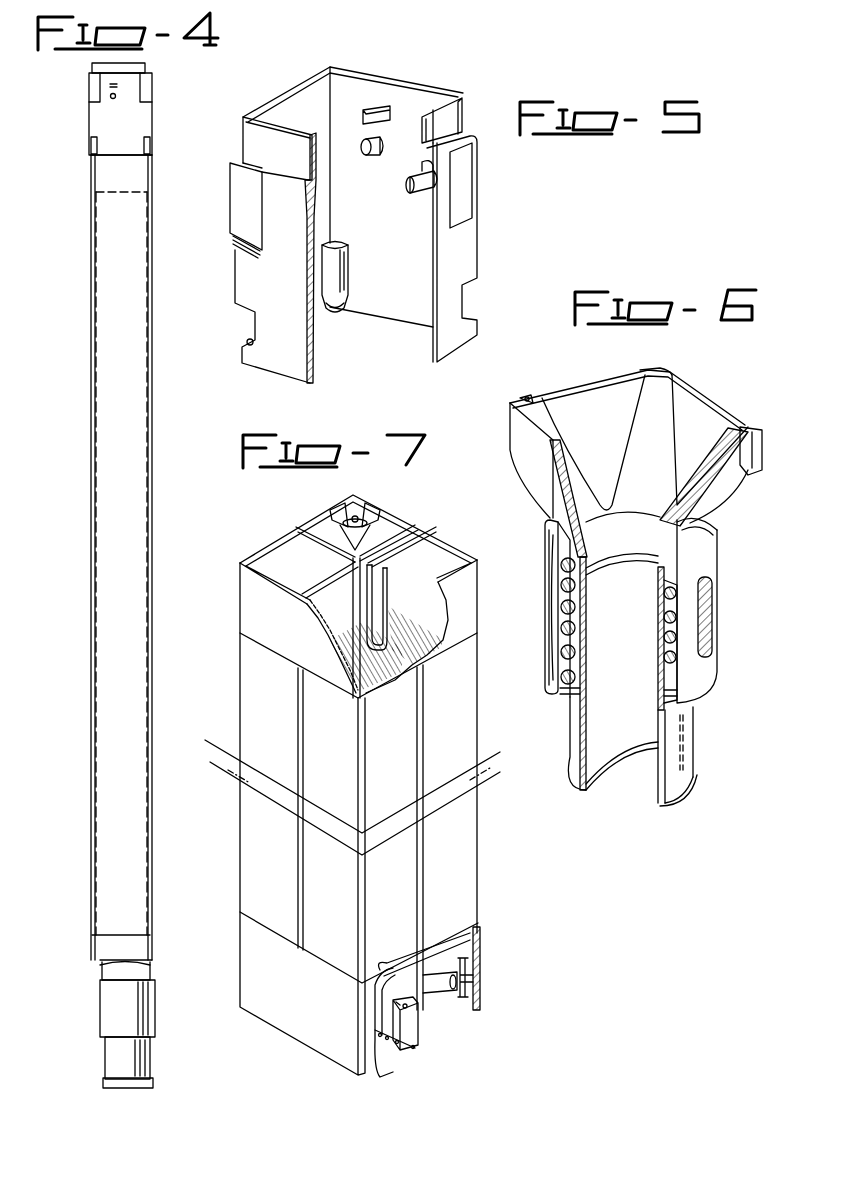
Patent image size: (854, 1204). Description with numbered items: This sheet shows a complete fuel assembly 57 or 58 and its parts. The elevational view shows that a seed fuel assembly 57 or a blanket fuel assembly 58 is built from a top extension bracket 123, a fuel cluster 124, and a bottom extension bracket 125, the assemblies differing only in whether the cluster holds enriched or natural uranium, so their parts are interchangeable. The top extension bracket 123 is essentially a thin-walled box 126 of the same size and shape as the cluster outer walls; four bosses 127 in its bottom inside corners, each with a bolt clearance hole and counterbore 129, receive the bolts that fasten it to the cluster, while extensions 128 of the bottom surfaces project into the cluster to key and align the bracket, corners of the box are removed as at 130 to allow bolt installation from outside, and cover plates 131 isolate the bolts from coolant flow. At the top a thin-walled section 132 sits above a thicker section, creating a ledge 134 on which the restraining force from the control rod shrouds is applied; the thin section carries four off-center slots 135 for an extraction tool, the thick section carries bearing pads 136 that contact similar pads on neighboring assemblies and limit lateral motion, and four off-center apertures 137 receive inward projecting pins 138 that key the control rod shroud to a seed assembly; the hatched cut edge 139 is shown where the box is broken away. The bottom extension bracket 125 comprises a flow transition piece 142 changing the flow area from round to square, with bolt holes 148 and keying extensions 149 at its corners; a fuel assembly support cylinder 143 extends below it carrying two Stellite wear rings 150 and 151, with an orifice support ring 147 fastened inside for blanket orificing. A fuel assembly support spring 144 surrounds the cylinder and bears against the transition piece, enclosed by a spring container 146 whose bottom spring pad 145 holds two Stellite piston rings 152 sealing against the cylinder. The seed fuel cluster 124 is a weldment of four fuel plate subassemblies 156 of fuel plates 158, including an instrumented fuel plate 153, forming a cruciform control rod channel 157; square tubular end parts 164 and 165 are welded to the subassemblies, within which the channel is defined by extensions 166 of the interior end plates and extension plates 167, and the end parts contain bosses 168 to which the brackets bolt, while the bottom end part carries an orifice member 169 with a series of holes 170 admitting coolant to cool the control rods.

In FIG. 4, the seed fuel assembly 57 is at (84, 660).
In FIG. 4, the blanket fuel assembly 58 is at (39, 625).
In FIG. 4, the top extension bracket 123 is at (90, 114).
In FIG. 5, the top extension bracket 123 is at (490, 206).
In FIG. 4, the fuel cluster 124 is at (100, 518).
In FIG. 7, the fuel cluster 124 is at (377, 785).
In FIG. 4, the bottom extension bracket 125 is at (105, 1007).
In FIG. 6, the bottom extension bracket 125 is at (707, 705).
In FIG. 5, the thin-walled box 126 is at (333, 225).
In FIG. 5, the bosses 127 is at (242, 348).
In FIG. 5, the extensions 128 is at (465, 345).
In FIG. 5, the bolt clearance hole and counterbore 129 is at (247, 342).
In FIG. 5, the removed corners 130 is at (235, 311).
In FIG. 5, the cover plates 131 is at (338, 246).
In FIG. 5, the thin-walled section 132 is at (462, 103).
In FIG. 5, the ledge 134 is at (230, 165).
In FIG. 5, the off-center slots 135 is at (380, 107).
In FIG. 5, the bearing pads 136 is at (240, 210).
In FIG. 5, the off-center apertures 137 is at (420, 166).
In FIG. 5, the inward projecting pins 138 is at (368, 138).
In FIG. 5, the edge 139 is at (316, 205).
In FIG. 6, the flow transition piece 142 is at (706, 410).
In FIG. 6, the fuel assembly support cylinder 143 is at (685, 748).
In FIG. 6, the fuel assembly support spring 144 is at (578, 632).
In FIG. 6, the spring pad 145 is at (557, 694).
In FIG. 6, the spring container 146 is at (712, 560).
In FIG. 6, the orifice support ring 147 is at (600, 580).
In FIG. 6, the bolt holes 148 is at (740, 470).
In FIG. 6, the keying extensions 149 is at (532, 385).
In FIG. 6, the wear ring 150 is at (690, 776).
In FIG. 6, the wear ring 151 is at (655, 708).
In FIG. 6, the piston rings 152 is at (583, 683).
In FIG. 7, the instrumented fuel plate 153 is at (420, 555).
In FIG. 7, the fuel plate subassemblies 156 is at (490, 838).
In FIG. 7, the control rod channel 157 is at (320, 540).
In FIG. 7, the fuel plate 158 is at (473, 935).
In FIG. 7, the top square tubular end part 164 is at (245, 598).
In FIG. 7, the bottom square tubular end part 165 is at (280, 1035).
In FIG. 7, the extensions 166 is at (400, 540).
In FIG. 7, the extension plates 167 is at (396, 522).
In FIG. 7, the bosses 168 is at (360, 515).
In FIG. 7, the orifice member 169 is at (400, 1050).
In FIG. 7, the holes 170 is at (418, 1008).